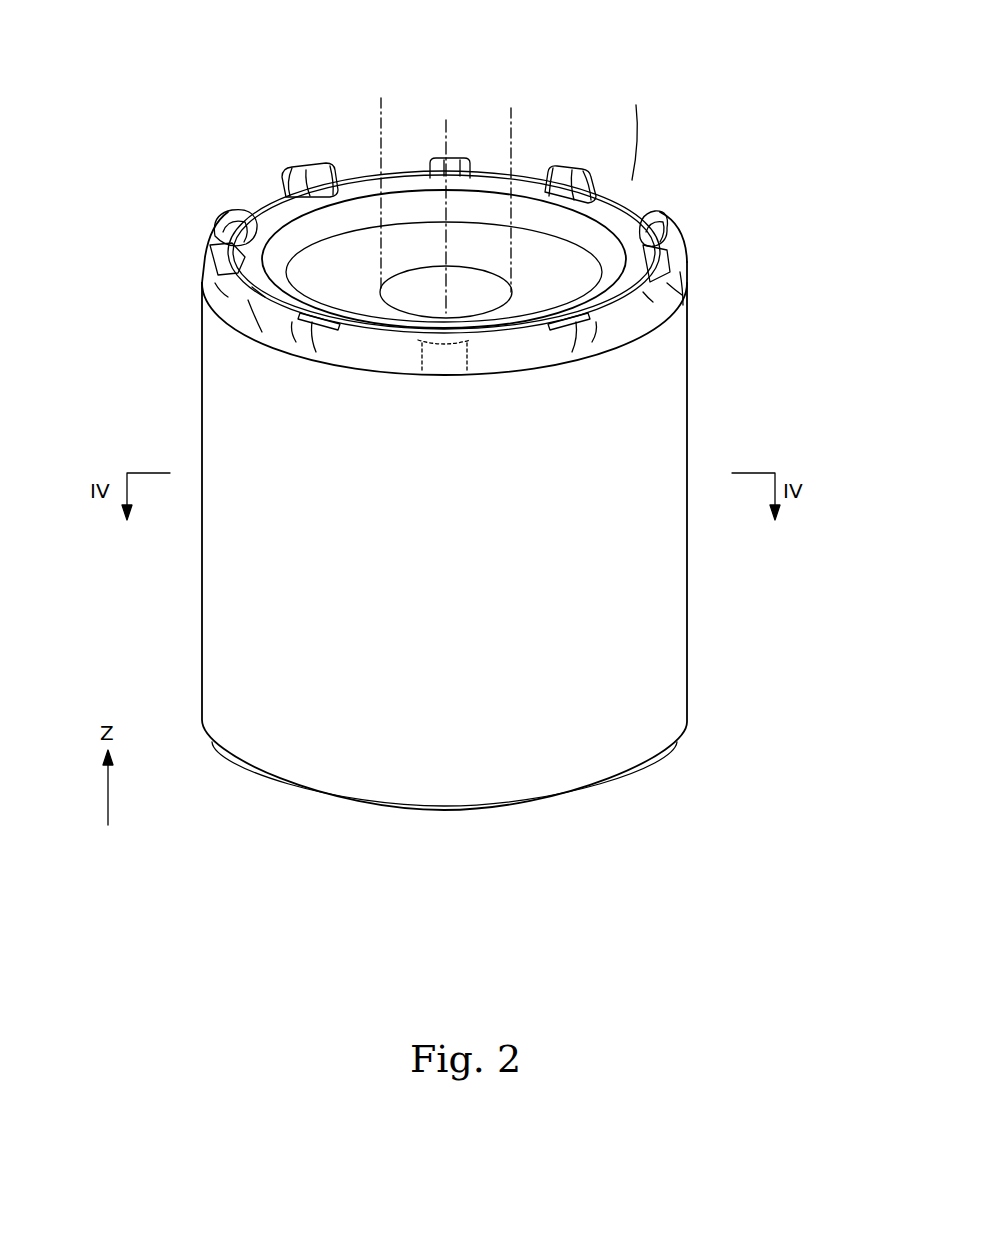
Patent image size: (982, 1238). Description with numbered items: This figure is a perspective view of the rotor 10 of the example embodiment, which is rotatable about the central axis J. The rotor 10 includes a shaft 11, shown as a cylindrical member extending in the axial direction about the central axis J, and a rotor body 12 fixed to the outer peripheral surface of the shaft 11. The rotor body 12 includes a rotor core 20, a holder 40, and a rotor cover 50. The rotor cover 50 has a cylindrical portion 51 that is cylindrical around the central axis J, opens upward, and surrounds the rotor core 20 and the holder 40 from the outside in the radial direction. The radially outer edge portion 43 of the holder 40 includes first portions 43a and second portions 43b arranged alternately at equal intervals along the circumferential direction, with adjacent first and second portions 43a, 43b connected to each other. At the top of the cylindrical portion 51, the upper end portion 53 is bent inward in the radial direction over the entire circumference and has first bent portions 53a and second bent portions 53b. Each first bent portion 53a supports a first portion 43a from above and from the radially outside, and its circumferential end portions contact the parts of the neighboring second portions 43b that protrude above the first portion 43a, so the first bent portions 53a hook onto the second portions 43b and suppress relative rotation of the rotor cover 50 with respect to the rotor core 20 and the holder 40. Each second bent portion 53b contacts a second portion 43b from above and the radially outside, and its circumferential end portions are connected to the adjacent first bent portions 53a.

The rotor 10 is at (653, 78).
The shaft 11 is at (522, 118).
The rotor body 12 is at (637, 176).
The rotor core 20 is at (567, 267).
The holder 40 is at (674, 258).
The radially outer edge portion 43 is at (318, 95).
The first portion 43a is at (294, 176).
The second portion 43b is at (318, 170).
The rotor cover 50 is at (702, 318).
The cylindrical portion 51 is at (665, 414).
The upper end portion 53 is at (110, 237).
The first bent portion 53a is at (256, 207).
The second bent portion 53b is at (223, 278).
The central axis J is at (447, 120).